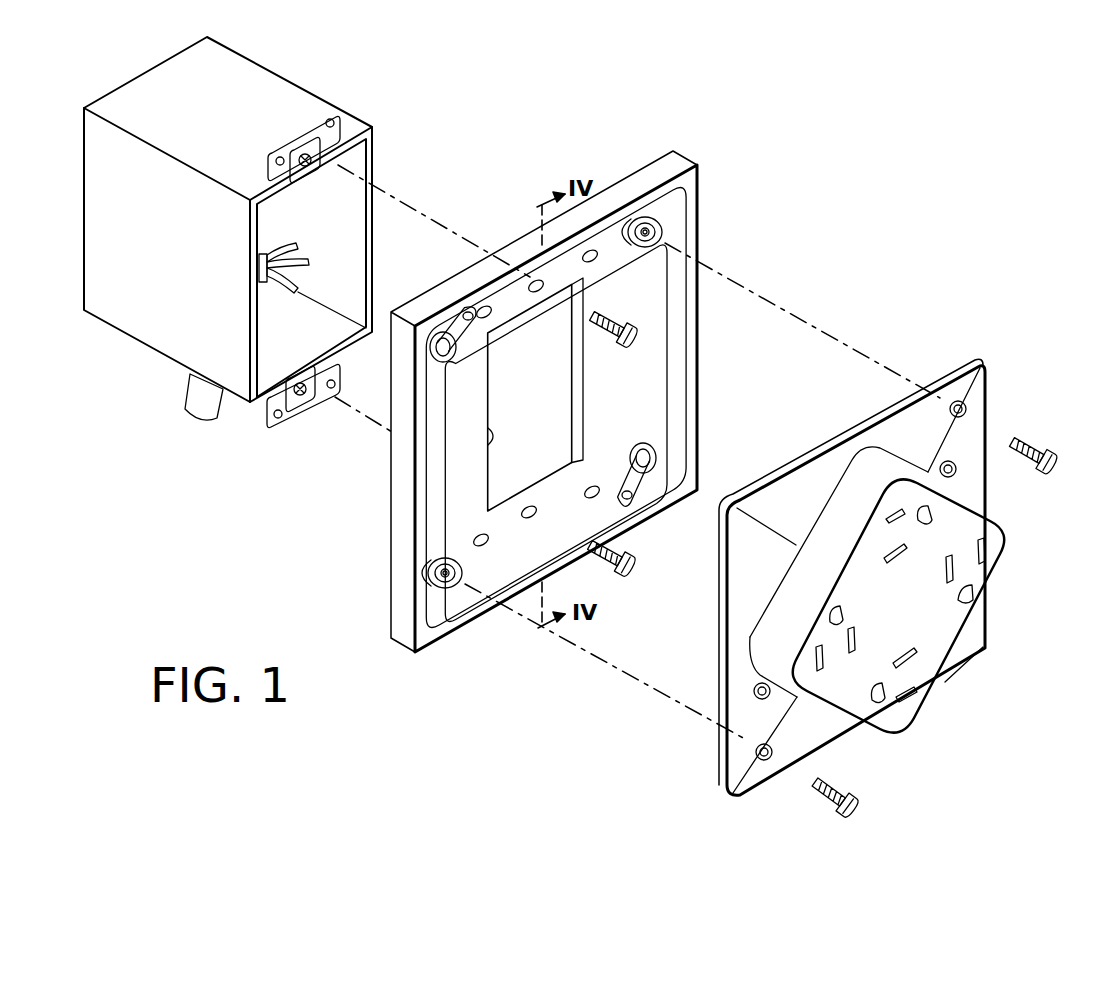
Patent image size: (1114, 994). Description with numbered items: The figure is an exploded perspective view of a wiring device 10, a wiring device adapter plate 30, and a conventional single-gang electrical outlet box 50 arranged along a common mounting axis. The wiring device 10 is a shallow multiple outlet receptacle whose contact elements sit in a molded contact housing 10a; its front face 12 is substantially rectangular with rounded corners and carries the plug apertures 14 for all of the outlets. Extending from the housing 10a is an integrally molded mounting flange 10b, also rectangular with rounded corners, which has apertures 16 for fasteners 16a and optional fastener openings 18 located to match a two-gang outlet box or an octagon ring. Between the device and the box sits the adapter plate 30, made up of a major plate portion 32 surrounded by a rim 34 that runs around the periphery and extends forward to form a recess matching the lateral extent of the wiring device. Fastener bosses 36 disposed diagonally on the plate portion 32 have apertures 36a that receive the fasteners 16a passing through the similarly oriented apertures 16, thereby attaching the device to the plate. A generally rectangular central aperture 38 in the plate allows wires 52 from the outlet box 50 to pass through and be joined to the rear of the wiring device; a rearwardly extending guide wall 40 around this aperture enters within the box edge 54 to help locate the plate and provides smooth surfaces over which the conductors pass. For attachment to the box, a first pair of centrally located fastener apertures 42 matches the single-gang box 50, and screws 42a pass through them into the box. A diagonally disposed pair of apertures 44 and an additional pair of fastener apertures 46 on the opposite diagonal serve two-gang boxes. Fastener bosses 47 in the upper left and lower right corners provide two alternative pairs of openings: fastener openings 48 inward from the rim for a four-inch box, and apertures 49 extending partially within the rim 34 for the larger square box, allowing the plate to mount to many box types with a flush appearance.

The wiring device 10 is at (986, 388).
The contact housing 10a is at (872, 452).
The mounting flange 10b is at (803, 478).
The front face 12 is at (988, 585).
The plug apertures 14 is at (902, 655).
The apertures 16 is at (958, 400).
The fasteners 16a is at (1046, 452).
The optional fastener openings 18 is at (958, 470).
The wiring device adapter plate 30 is at (700, 183).
The major plate portion 32 is at (661, 352).
The rim 34 is at (693, 334).
The fastener bosses 36 is at (652, 216).
The apertures 36a is at (660, 234).
The central aperture 38 is at (485, 440).
The guide wall 40 is at (573, 397).
The fastener apertures 42 is at (538, 297).
The screws 42a is at (620, 338).
The apertures 44 is at (486, 322).
The fastener apertures 46 is at (594, 259).
The fastener bosses 47 is at (443, 332).
The fastener openings 48 is at (446, 363).
The apertures 49 is at (470, 303).
The electrical outlet box 50 is at (262, 82).
The wires 52 is at (302, 262).
The box edge 54 is at (250, 405).